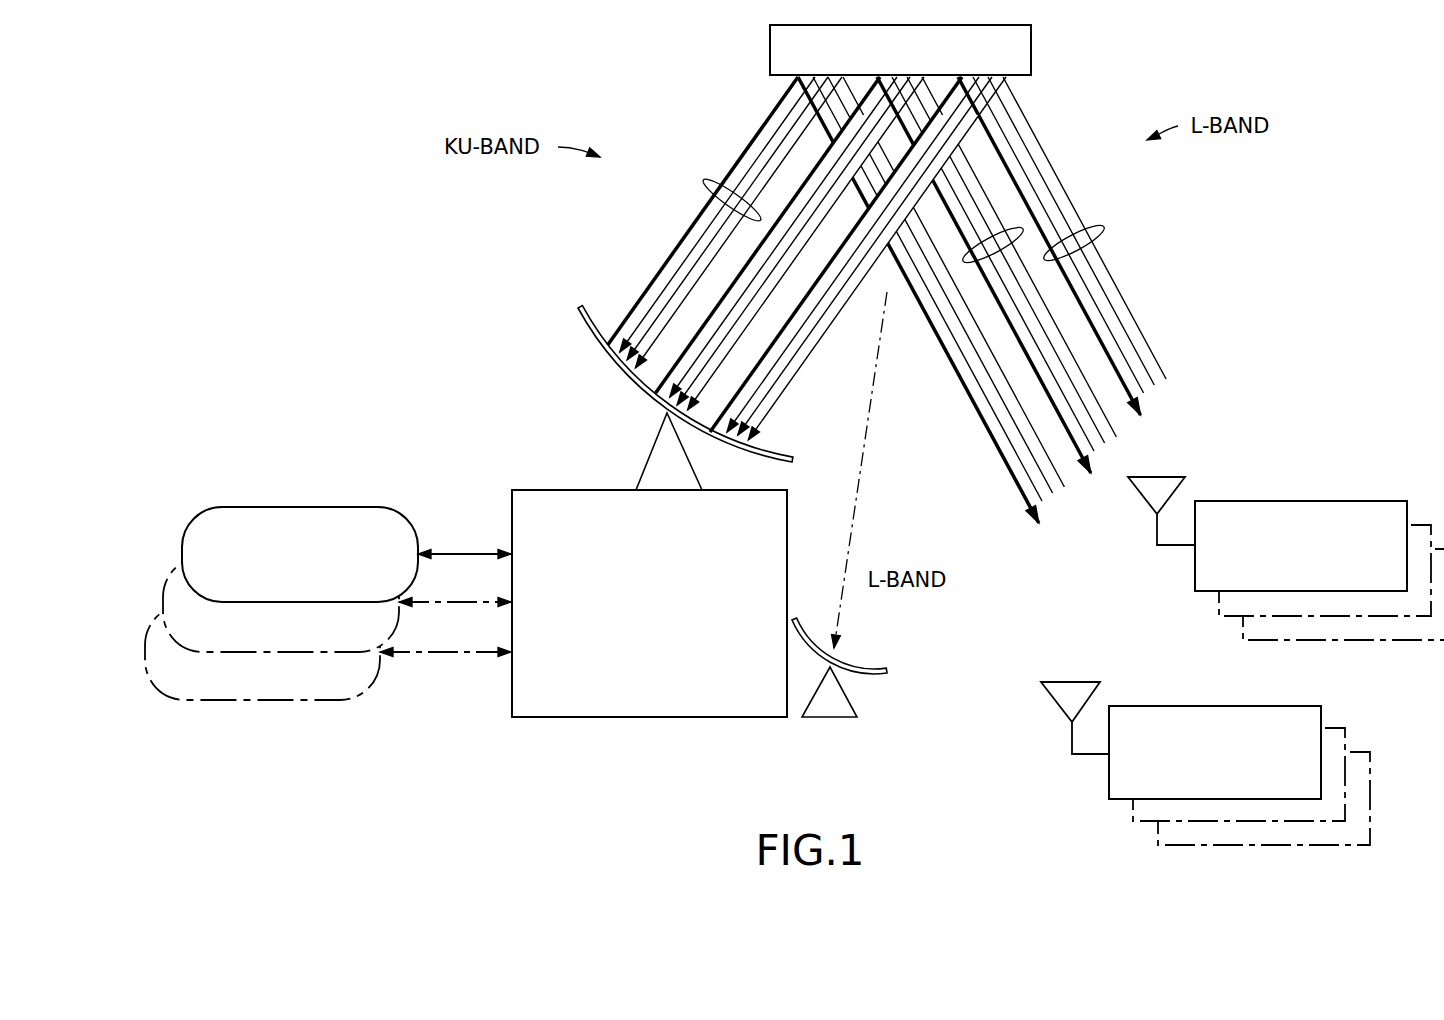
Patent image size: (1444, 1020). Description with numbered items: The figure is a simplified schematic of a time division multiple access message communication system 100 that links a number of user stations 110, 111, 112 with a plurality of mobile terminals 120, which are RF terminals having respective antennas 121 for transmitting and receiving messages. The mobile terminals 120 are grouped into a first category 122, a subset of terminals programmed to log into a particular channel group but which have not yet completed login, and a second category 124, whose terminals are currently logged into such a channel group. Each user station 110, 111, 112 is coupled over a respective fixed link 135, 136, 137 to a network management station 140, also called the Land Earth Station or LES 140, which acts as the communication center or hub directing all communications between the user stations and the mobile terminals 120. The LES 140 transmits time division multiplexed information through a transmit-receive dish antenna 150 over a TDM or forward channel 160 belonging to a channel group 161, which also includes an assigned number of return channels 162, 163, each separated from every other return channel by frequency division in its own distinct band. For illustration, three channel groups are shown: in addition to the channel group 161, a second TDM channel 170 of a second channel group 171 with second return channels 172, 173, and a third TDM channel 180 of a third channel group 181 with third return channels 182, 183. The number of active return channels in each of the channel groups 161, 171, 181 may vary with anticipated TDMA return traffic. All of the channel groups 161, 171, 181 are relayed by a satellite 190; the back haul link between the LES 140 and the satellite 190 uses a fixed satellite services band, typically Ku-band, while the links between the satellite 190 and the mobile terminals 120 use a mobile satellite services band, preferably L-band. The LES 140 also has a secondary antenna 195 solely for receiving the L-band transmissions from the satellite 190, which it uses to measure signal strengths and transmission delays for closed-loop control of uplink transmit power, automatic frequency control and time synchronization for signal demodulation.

The communication system 100 is at (540, 267).
The user station 110 is at (255, 507).
The user station 111 is at (162, 600).
The user station 112 is at (200, 702).
The mobile terminal 120 is at (1270, 501).
The antenna 121 is at (1160, 477).
The first category of mobile terminals 122 is at (1285, 450).
The second category of mobile terminals 124 is at (1091, 780).
The fixed link 135 is at (458, 553).
The fixed link 136 is at (432, 603).
The fixed link 137 is at (483, 655).
The network management station 140 is at (560, 720).
The transmit-receive dish antenna 150 is at (642, 398).
The TDM channel 160 is at (752, 140).
The channel group 161 is at (702, 172).
The return channel 162 is at (706, 230).
The return channel 163 is at (697, 263).
The second TDM channel 170 is at (967, 128).
The second channel group 171 is at (990, 227).
The second return channel 172 is at (937, 185).
The second return channel 173 is at (963, 203).
The third TDM channel 180 is at (1075, 285).
The third channel group 181 is at (1108, 223).
The third return channel 182 is at (1100, 302).
The third return channel 183 is at (1133, 333).
The satellite 190 is at (1031, 44).
The secondary antenna 195 is at (850, 693).